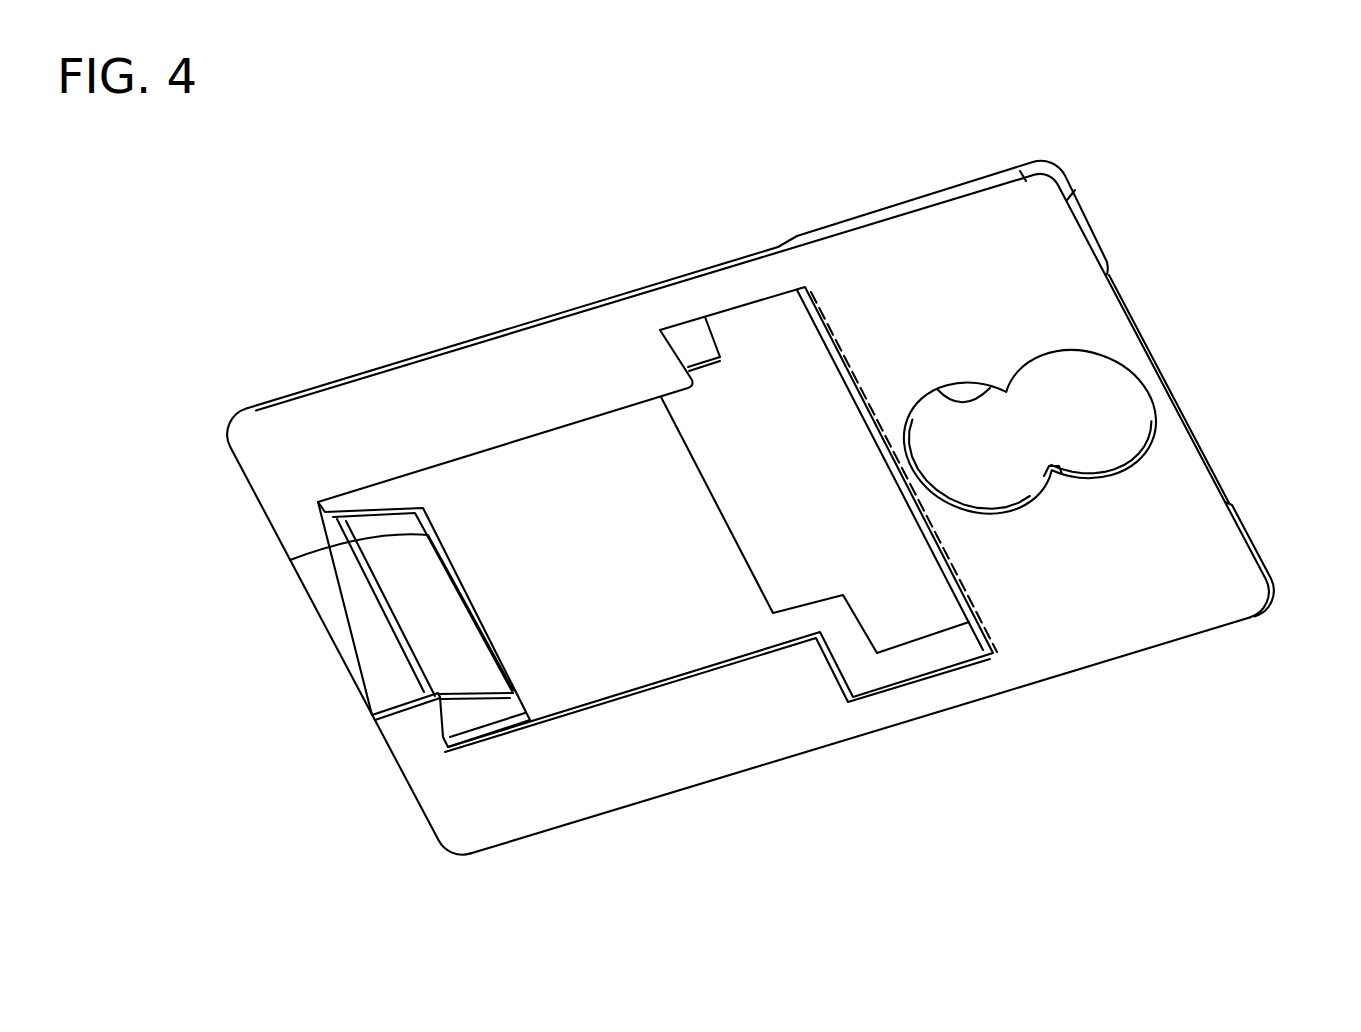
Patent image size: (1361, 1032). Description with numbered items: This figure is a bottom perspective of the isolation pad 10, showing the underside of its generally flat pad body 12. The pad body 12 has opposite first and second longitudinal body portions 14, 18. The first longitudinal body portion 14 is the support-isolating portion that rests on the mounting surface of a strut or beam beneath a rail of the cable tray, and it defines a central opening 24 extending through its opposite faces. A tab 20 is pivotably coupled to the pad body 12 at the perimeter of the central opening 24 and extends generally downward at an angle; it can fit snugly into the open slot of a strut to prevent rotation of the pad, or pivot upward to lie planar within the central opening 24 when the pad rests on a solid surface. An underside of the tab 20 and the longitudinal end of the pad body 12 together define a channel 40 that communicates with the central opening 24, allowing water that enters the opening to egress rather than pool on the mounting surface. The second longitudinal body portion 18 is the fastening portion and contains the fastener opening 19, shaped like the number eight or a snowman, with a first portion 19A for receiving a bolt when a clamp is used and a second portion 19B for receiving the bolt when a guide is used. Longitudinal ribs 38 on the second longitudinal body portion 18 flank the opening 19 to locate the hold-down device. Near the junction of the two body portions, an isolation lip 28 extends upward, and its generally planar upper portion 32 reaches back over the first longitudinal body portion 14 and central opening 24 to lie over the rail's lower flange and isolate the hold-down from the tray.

The isolation pad 10 is at (452, 203).
The pad body 12 is at (386, 350).
The first longitudinal body portion 14 is at (742, 772).
The second longitudinal body portion 18 is at (1147, 650).
The fastener opening 19 is at (1050, 442).
The first portion of the fastener opening 19A is at (1000, 385).
The second portion of the fastener opening 19B is at (1147, 450).
The tab 20 is at (505, 683).
The central opening 24 is at (617, 571).
The isolation lip 28 is at (935, 656).
The upper portion 32 is at (757, 350).
The longitudinal ribs 38 is at (918, 201).
The channel 40 is at (444, 611).